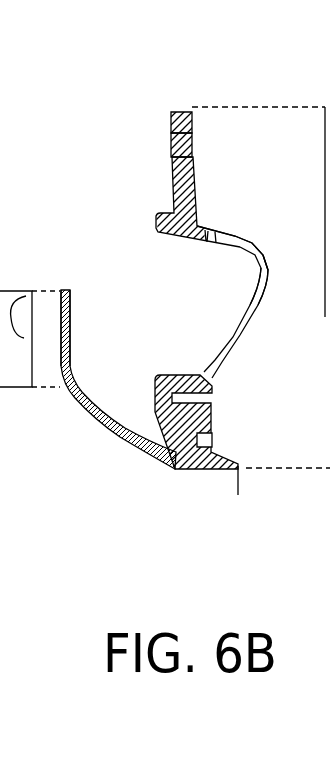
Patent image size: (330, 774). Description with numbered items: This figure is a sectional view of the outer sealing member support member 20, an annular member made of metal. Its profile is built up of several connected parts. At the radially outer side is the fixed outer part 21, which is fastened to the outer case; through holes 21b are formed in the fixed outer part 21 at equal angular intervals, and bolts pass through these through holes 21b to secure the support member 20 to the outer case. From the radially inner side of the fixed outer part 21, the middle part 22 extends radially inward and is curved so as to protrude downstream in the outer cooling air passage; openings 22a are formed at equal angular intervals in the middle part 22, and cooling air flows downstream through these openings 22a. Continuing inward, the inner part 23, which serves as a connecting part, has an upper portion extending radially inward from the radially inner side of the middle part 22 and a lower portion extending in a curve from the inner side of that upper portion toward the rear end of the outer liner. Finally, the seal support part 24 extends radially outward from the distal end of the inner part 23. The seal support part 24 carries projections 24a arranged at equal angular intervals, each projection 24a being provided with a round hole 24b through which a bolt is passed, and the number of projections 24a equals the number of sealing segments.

The outer sealing member support member 20 is at (203, 33).
The fixed outer part 21 is at (199, 155).
The through holes 21b is at (169, 152).
The middle part 22 is at (235, 236).
The openings 22a is at (270, 272).
The inner part 23 is at (171, 472).
The seal support part 24 is at (62, 289).
The round holes 24b is at (72, 303).
The projections 24a is at (72, 336).